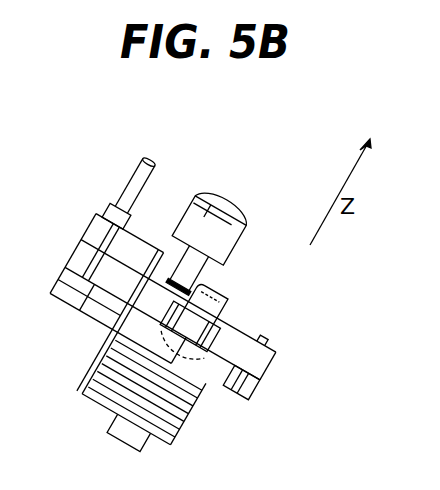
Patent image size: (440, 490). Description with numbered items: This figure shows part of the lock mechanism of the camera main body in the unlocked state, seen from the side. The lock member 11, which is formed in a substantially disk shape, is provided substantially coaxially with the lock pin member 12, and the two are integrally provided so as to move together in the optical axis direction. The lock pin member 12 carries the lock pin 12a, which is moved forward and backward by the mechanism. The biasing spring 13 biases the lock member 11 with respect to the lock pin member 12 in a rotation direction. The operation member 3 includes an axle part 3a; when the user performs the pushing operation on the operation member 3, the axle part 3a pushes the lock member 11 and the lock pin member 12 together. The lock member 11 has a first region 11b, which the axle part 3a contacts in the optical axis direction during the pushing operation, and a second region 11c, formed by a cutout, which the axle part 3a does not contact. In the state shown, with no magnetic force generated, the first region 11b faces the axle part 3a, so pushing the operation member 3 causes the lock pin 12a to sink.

The operation member 3 is at (212, 218).
The axle part 3a is at (176, 270).
The lock member 11 is at (260, 359).
The first region 11b is at (95, 245).
The second region 11c is at (228, 308).
The lock pin member 12 is at (232, 381).
The lock pin 12a is at (127, 181).
The biasing spring 13 is at (189, 405).